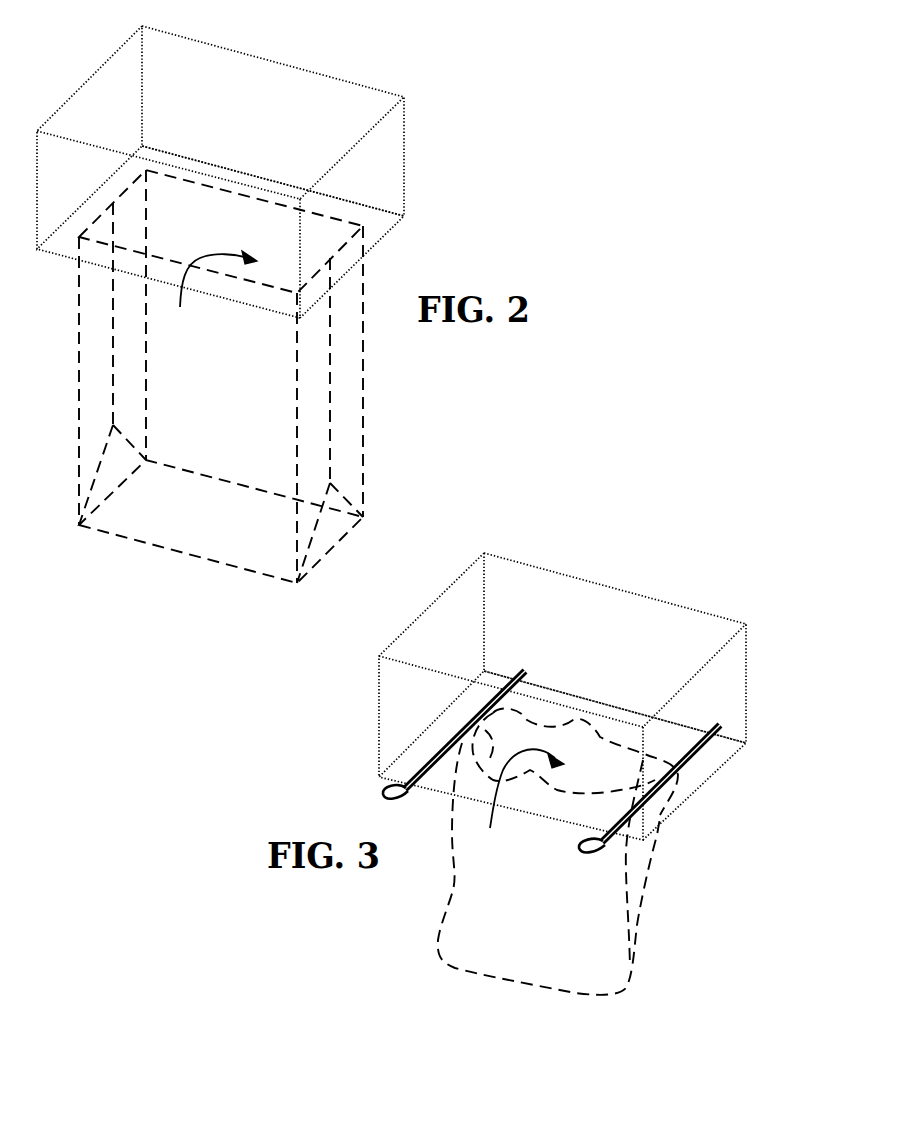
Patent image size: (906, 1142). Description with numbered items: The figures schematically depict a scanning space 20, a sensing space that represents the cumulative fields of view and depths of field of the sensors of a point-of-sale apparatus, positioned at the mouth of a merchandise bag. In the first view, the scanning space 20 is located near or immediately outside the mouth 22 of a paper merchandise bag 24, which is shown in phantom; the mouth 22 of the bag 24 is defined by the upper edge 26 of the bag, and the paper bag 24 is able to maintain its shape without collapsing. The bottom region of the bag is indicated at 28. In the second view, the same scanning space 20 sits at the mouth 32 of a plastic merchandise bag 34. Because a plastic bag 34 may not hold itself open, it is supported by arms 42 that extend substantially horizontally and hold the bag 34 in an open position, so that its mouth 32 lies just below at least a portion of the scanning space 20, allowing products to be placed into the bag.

In FIG. 2, the scanning space 20 is at (405, 162).
In FIG. 3, the scanning space 20 is at (570, 575).
In FIG. 2, the mouth 22 is at (213, 291).
In FIG. 2, the paper merchandise bag 24 is at (244, 376).
In FIG. 2, the upper edge 26 is at (130, 185).
In FIG. 2, the bag bottom 28 is at (222, 532).
In FIG. 3, the mouth 32 is at (522, 798).
In FIG. 3, the plastic merchandise bag 34 is at (452, 892).
In FIG. 3, the arms 42 is at (429, 765).